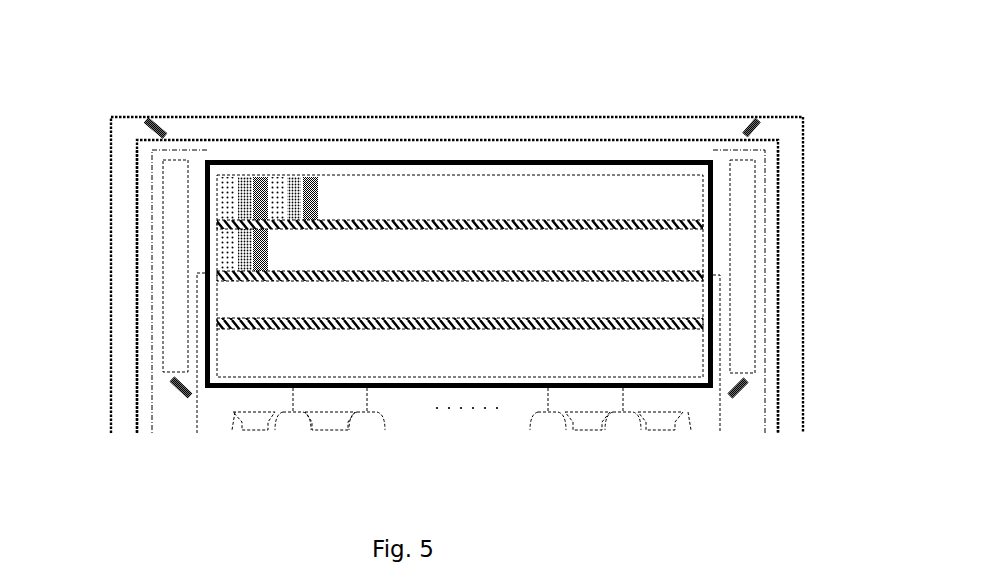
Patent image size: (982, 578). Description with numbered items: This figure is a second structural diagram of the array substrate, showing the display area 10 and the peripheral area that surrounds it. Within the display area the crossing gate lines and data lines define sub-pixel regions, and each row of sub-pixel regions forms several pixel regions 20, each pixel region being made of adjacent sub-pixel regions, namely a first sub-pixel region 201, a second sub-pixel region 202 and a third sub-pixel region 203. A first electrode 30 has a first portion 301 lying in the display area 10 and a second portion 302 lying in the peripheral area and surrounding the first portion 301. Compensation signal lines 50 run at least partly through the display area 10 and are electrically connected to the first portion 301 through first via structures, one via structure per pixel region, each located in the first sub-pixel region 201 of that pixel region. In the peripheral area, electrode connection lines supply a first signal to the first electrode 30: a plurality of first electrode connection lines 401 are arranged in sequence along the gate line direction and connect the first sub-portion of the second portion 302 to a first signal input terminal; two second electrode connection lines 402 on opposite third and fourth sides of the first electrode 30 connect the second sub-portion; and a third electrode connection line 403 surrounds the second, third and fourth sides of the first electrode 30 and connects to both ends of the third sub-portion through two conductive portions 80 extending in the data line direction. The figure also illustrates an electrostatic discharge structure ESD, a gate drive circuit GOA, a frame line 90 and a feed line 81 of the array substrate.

The display area 10 is at (552, 165).
The pixel region 20 is at (260, 149).
The first sub-pixel region 201 is at (223, 176).
The second sub-pixel region 202 is at (242, 176).
The third sub-pixel region 203 is at (288, 173).
The first electrode 30 is at (459, 200).
The first portion 301 is at (445, 193).
The second portion 302 is at (498, 167).
The compensation signal lines 50 is at (385, 220).
The conductive portion 80 is at (697, 138).
The feed line 81 is at (150, 333).
The frame line 90 is at (805, 243).
The first electrode connection line 401 is at (208, 390).
The second electrode connection line 402 is at (197, 365).
The third electrode connection line 403 is at (137, 305).
The gate drive circuit GOA is at (180, 193).
The electrostatic discharge structure ESD is at (762, 122).